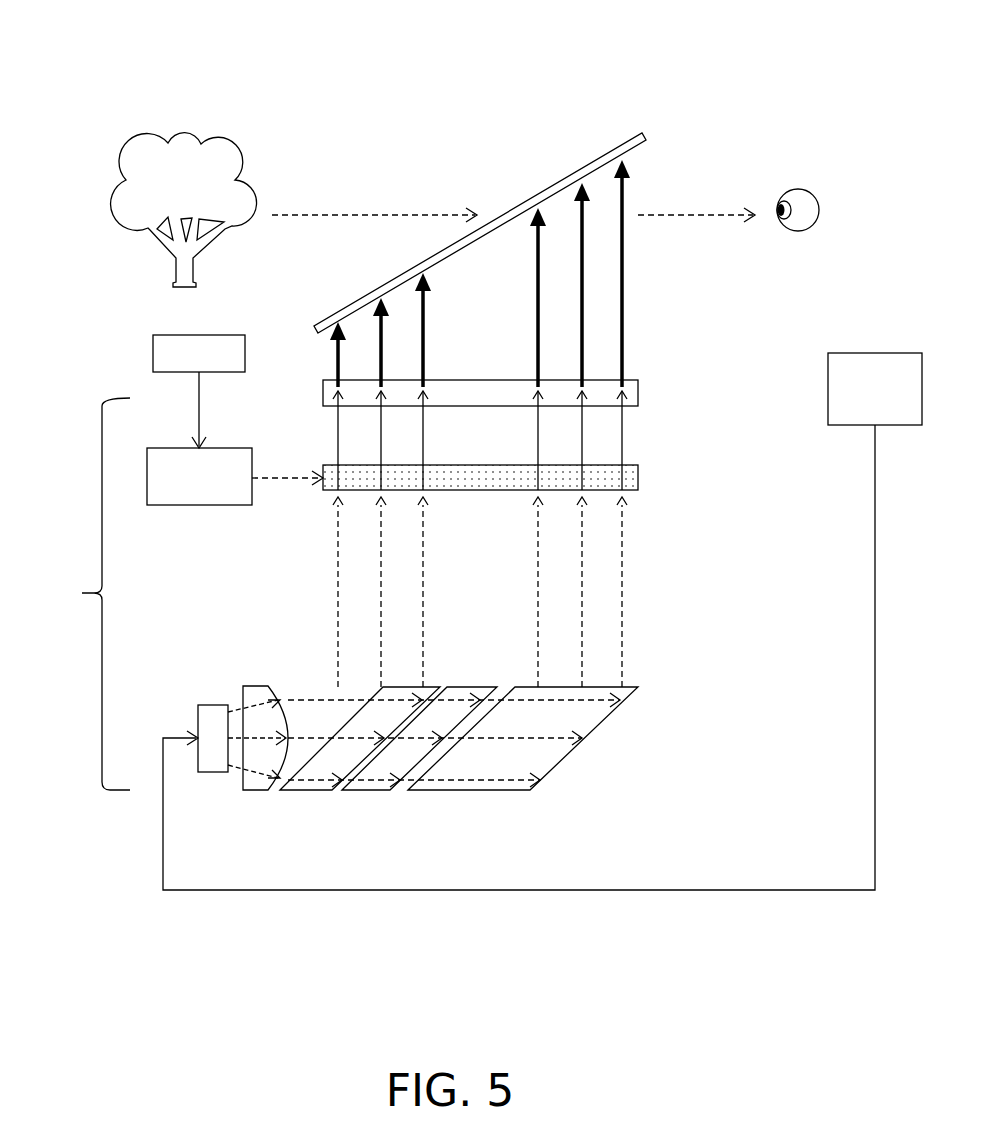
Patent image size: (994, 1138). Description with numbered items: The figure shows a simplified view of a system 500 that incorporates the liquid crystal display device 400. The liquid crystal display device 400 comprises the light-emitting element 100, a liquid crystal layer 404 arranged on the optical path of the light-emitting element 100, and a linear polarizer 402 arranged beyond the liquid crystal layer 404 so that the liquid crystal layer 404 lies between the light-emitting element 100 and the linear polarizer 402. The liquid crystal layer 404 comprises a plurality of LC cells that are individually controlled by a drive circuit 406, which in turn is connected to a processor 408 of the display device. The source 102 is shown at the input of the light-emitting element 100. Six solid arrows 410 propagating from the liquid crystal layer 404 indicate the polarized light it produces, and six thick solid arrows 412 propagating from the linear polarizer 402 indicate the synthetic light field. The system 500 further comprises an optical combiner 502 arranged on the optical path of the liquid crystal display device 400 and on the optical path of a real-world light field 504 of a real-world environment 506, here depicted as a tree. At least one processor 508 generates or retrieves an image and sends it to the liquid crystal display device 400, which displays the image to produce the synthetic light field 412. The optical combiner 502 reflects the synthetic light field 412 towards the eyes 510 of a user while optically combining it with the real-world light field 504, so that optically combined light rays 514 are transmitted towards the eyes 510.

The system 500 is at (271, 58).
The real-world environment 506 is at (154, 175).
The real-world light field 504 is at (374, 157).
The optical combiner 502 is at (480, 188).
The optically combined light rays 514 is at (696, 139).
The eyes 510 is at (808, 132).
The synthetic light field 412 is at (539, 273).
The linear polarizer 402 is at (535, 384).
The polarized light 410 is at (537, 440).
The liquid crystal layer 404 is at (535, 571).
The processor 408 is at (181, 368).
The drive circuit 406 is at (181, 492).
The processor 508 is at (857, 404).
The liquid crystal display device 400 is at (82, 593).
The light source 102 is at (237, 726).
The light-emitting element 100 is at (650, 680).